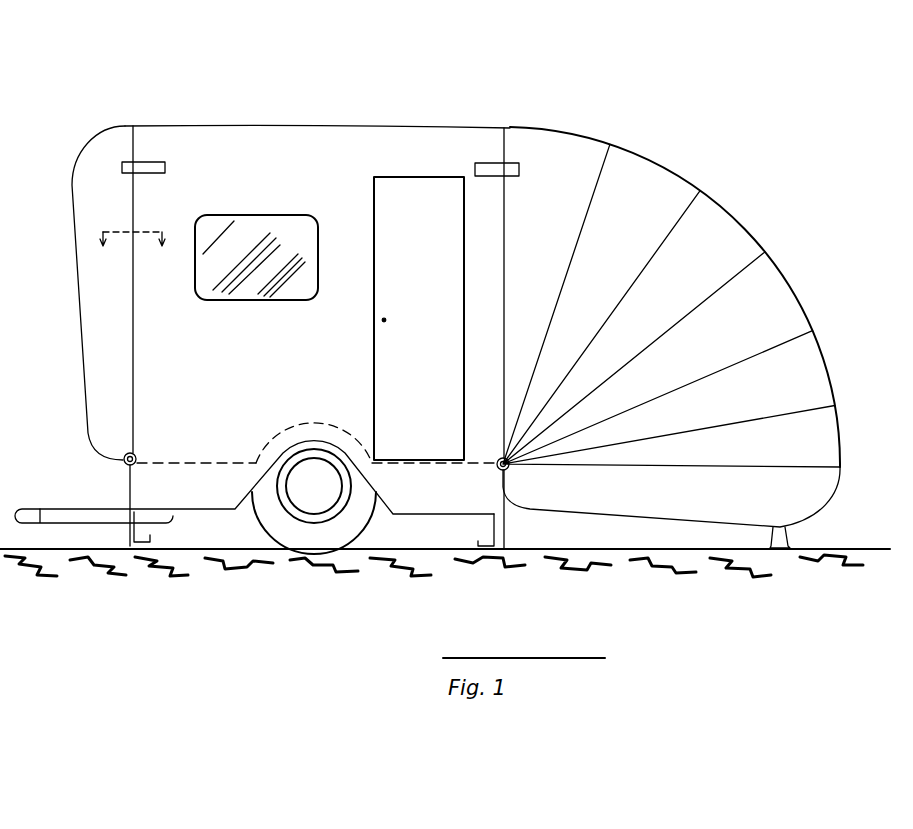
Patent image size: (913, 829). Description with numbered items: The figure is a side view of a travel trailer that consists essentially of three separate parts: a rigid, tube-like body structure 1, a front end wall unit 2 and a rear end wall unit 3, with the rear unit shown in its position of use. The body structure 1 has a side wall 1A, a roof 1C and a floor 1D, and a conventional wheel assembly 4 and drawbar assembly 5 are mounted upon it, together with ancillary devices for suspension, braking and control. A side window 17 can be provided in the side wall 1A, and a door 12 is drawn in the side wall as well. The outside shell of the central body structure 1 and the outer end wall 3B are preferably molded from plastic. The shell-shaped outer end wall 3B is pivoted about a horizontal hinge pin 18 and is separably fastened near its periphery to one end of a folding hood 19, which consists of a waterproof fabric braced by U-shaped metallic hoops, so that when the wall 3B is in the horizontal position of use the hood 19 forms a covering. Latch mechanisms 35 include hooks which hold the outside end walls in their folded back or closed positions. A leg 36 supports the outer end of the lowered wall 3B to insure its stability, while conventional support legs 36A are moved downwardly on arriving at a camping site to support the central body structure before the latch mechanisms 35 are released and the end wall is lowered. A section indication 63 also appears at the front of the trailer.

The body structure 1 is at (351, 107).
The side wall 1A is at (215, 160).
The roof 1C is at (263, 123).
The floor 1D is at (172, 460).
The front end wall unit 2 is at (110, 158).
The rear end wall unit 3 is at (708, 169).
The outer end wall 3B is at (810, 492).
The wheel assembly 4 is at (308, 532).
The drawbar assembly 5 is at (90, 510).
The door 12 is at (420, 200).
The side window 17 is at (292, 232).
The horizontal hinge pin 18 is at (498, 469).
The folding hood 19 is at (698, 227).
The latch mechanism 35 is at (148, 162).
The leg 36 is at (772, 552).
The support leg 36A is at (502, 537).
The section indicator 63 is at (87, 248).